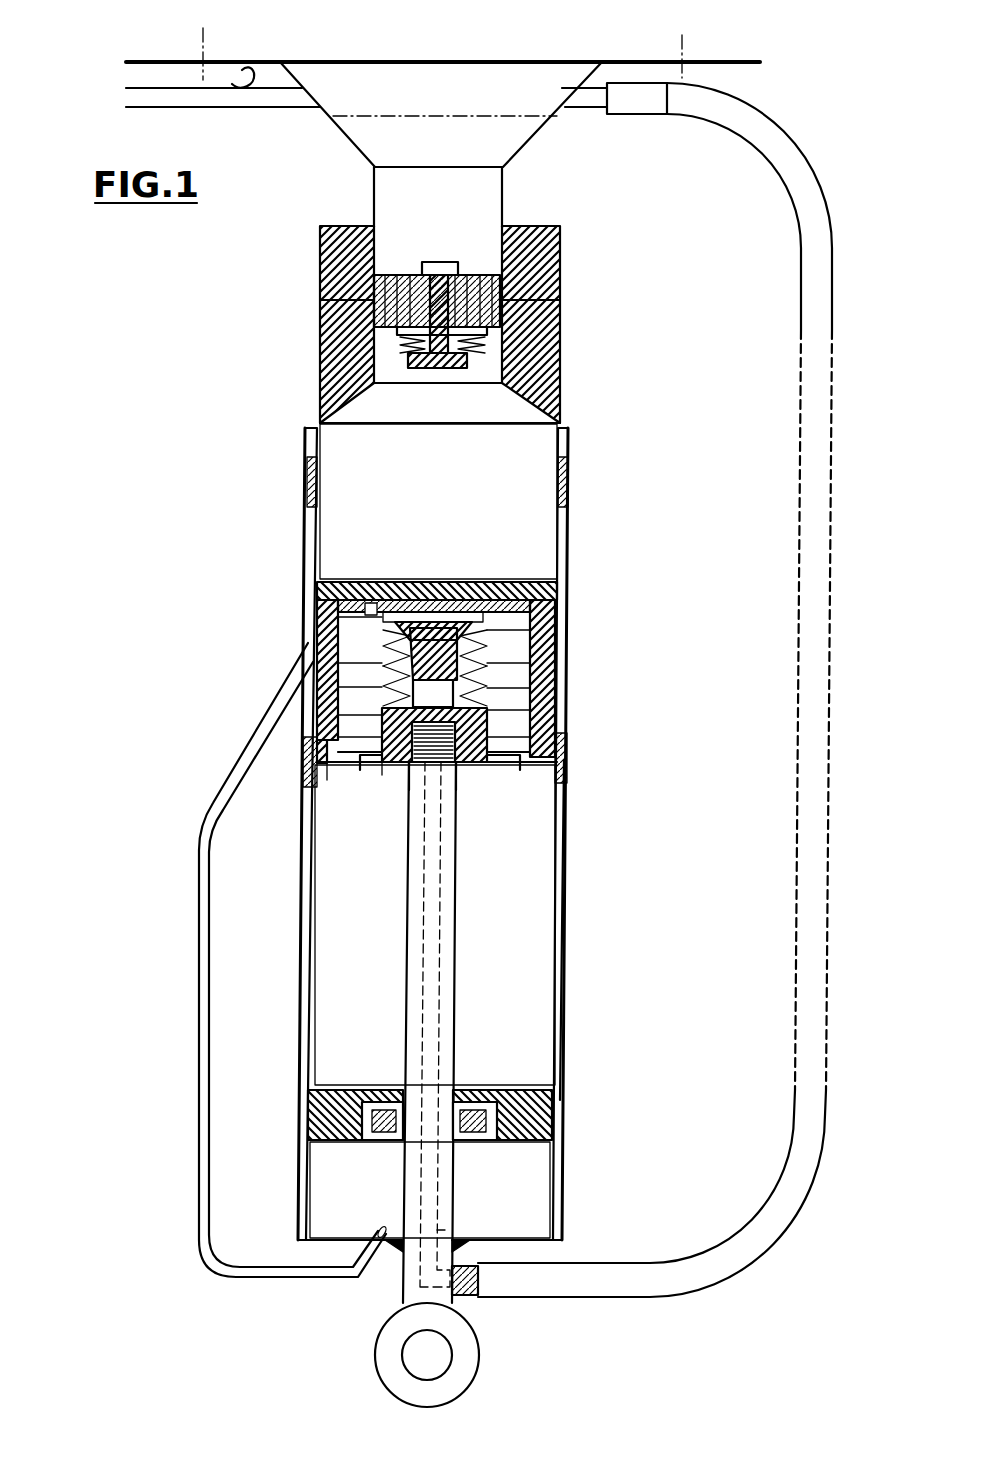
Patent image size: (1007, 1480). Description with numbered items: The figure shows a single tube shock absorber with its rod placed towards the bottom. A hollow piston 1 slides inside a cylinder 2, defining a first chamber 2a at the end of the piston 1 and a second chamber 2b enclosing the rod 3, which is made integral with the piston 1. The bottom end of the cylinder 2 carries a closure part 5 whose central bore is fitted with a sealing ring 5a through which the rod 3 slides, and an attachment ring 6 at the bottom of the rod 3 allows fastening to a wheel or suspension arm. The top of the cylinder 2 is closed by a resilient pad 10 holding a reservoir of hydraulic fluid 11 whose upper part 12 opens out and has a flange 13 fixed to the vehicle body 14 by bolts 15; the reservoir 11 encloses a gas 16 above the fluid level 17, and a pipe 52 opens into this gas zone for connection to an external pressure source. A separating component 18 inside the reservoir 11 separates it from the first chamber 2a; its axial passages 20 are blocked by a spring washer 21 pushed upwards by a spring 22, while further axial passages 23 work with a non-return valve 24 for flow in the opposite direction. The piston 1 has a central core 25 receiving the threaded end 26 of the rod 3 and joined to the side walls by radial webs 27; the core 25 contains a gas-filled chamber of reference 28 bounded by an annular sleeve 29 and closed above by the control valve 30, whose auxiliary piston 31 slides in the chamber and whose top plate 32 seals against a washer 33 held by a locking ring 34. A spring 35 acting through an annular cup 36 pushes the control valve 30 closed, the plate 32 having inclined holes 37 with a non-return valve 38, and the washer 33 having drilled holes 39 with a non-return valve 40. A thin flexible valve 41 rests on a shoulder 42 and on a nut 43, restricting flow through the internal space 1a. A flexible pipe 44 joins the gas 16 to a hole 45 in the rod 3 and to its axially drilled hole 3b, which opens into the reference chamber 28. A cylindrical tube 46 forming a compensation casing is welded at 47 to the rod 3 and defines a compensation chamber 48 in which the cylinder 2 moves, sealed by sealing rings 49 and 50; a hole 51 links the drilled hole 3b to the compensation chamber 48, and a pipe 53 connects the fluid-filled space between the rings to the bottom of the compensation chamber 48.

The piston 1 is at (455, 688).
The internal space 1a is at (352, 712).
The cylinder 2 is at (302, 920).
The first chamber 2a is at (357, 443).
The second chamber 2b is at (340, 945).
The rod 3 is at (413, 962).
The axially drilled hole 3b is at (430, 997).
The closure part 5 is at (537, 1117).
The sealing ring 5a is at (362, 1113).
The attachment ring 6 is at (387, 1345).
The resilient pad 10 is at (347, 265).
The reservoir of hydraulic fluid 11 is at (504, 200).
The upper part 12 is at (311, 110).
The flange 13 is at (232, 84).
The body 14 is at (330, 60).
The bolts 15 is at (682, 35).
The gas 16 is at (557, 78).
The level of the fluid 17 is at (497, 115).
The separating component 18 is at (340, 302).
The axial passages 20 is at (390, 312).
The spring washer 21 is at (478, 335).
The spring 22 is at (557, 367).
The axial passages 23 is at (497, 288).
The non-return valve 24 is at (472, 265).
The central core 25 is at (512, 757).
The threaded end 26 is at (455, 782).
The radial webs 27 is at (385, 745).
The chamber of reference 28 is at (475, 690).
The annular sleeve 29 is at (500, 712).
The control valve 30 is at (437, 615).
The auxiliary piston 31 is at (458, 625).
The top plate 32 is at (318, 628).
The washer 33 is at (318, 608).
The locking ring 34 is at (343, 590).
The spring 35 is at (395, 688).
The annular cup 36 is at (395, 652).
The holes 37 is at (470, 632).
The non-return valve 38 is at (473, 647).
The drilled holes 39 is at (372, 605).
The non-return valve 40 is at (387, 603).
The valve 41 is at (352, 765).
The shoulder 42 is at (305, 748).
The nut 43 is at (385, 768).
The flexible pipe 44 is at (813, 268).
The hole 45 is at (462, 1280).
The cylindrical tube 46 is at (563, 967).
The welding 47 is at (462, 1250).
The compensation chamber 48 is at (523, 1180).
The sealing ring 49 is at (570, 487).
The sealing ring 50 is at (562, 760).
The hole 51 is at (443, 1230).
The pipe 52 is at (158, 100).
The pipe 53 is at (199, 1072).